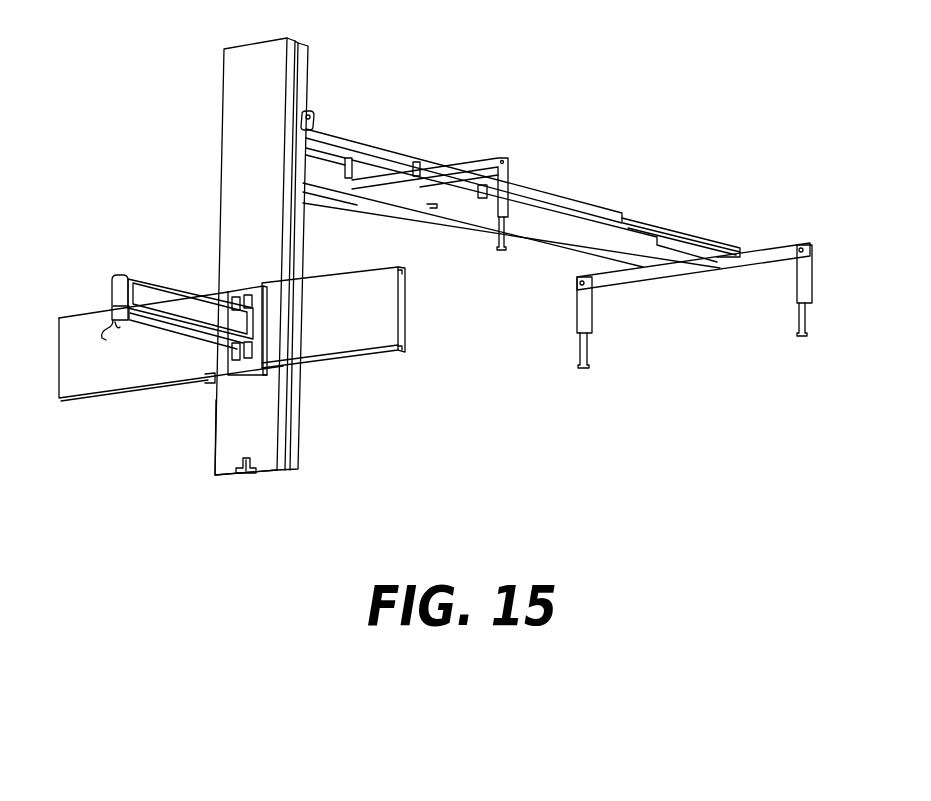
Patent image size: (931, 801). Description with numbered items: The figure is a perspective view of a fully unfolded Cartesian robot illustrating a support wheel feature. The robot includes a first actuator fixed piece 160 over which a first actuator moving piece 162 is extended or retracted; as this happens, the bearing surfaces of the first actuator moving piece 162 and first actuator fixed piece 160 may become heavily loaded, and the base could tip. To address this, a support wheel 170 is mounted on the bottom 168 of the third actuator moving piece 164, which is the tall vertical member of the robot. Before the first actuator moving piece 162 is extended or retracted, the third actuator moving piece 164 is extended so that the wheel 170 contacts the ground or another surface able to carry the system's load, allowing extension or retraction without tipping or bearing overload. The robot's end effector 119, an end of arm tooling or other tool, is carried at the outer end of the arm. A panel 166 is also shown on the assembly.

The end effector 119 is at (120, 327).
The first actuator fixed piece 160 is at (572, 217).
The first actuator moving piece 162 is at (552, 197).
The third actuator moving piece 164 is at (242, 73).
The panel 166 is at (385, 305).
The bottom of the third actuator moving piece 168 is at (228, 453).
The support wheel 170 is at (242, 473).